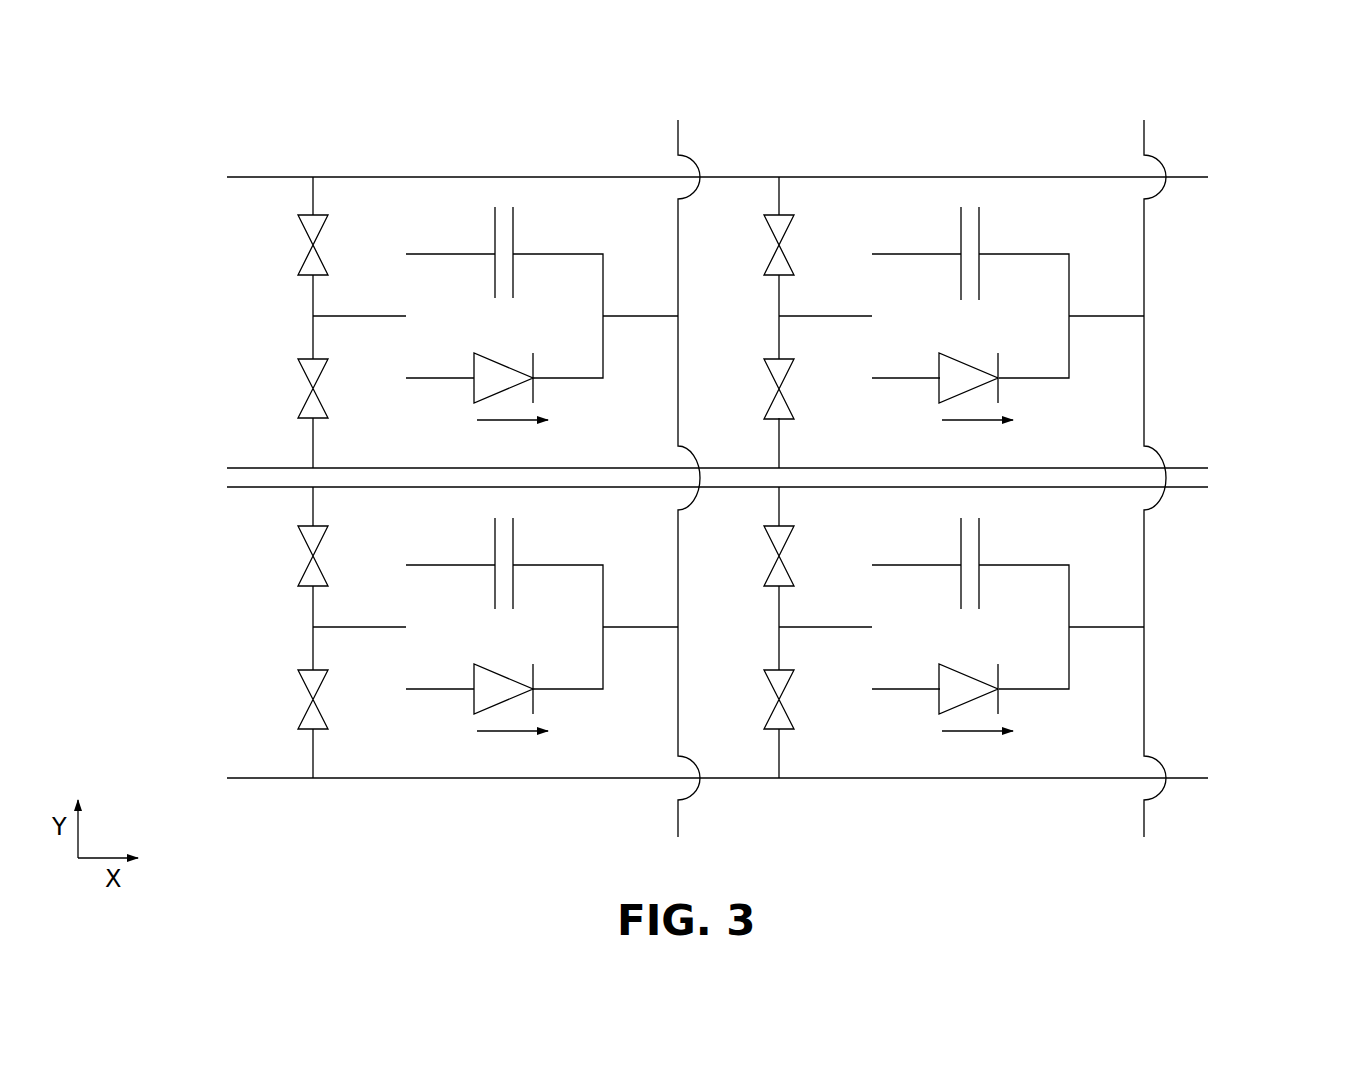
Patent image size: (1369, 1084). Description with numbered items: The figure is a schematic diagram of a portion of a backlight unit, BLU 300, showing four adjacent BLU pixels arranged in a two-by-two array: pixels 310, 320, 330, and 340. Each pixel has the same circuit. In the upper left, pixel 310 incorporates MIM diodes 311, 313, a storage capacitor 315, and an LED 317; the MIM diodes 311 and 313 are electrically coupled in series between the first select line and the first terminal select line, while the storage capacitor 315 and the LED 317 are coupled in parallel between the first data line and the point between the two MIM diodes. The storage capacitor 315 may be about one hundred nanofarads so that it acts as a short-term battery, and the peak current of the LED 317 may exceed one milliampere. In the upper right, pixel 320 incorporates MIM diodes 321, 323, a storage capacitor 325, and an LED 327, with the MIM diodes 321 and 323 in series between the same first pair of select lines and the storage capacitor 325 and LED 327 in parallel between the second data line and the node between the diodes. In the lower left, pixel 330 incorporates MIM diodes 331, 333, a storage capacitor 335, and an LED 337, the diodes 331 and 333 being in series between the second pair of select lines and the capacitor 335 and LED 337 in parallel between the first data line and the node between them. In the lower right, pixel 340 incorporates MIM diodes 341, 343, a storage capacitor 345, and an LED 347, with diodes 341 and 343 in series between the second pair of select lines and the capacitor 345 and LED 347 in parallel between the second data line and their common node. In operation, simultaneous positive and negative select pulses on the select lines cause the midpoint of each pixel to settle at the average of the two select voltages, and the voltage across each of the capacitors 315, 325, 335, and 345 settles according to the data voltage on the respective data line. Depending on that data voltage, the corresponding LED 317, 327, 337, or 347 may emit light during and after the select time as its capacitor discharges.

The BLU 300 is at (1277, 153).
The pixel 310 is at (412, 152).
The pixel 320 is at (977, 153).
The pixel 330 is at (447, 815).
The pixel 340 is at (990, 817).
The MIM diode 311 is at (292, 250).
The MIM diode 313 is at (280, 388).
The storage capacitor 315 is at (468, 245).
The LED 317 is at (457, 395).
The MIM diode 321 is at (758, 252).
The MIM diode 323 is at (760, 390).
The storage capacitor 325 is at (938, 245).
The LED 327 is at (922, 395).
The MIM diode 331 is at (292, 561).
The MIM diode 333 is at (292, 699).
The storage capacitor 335 is at (468, 556).
The LED 337 is at (457, 705).
The MIM diode 341 is at (758, 562).
The MIM diode 343 is at (760, 701).
The storage capacitor 345 is at (938, 556).
The LED 347 is at (922, 706).